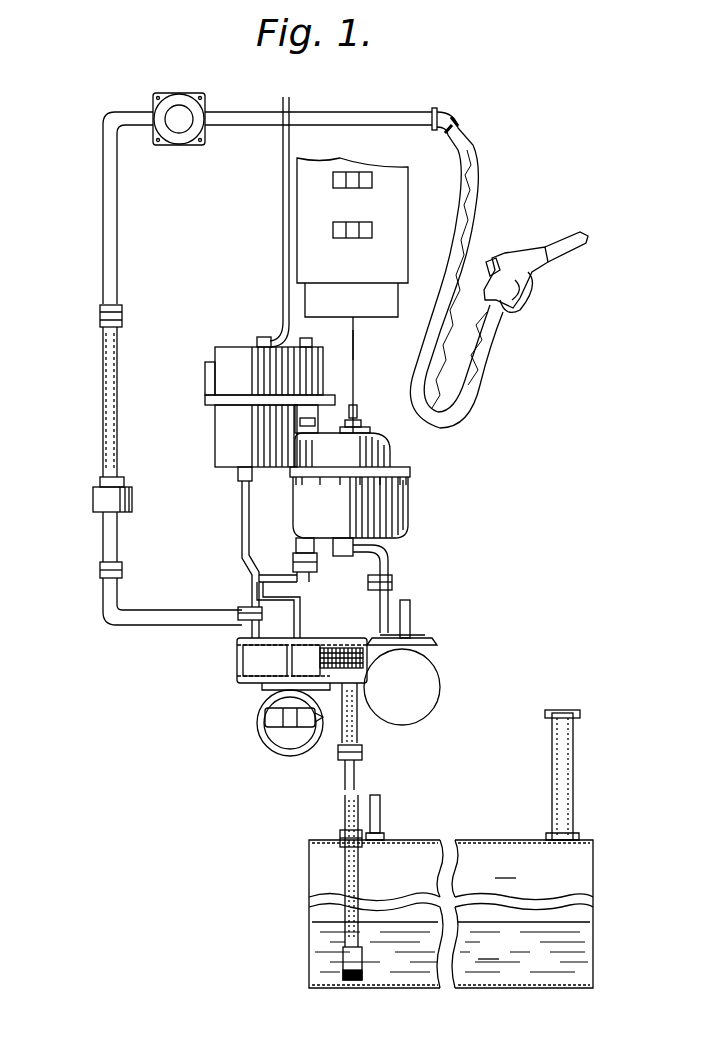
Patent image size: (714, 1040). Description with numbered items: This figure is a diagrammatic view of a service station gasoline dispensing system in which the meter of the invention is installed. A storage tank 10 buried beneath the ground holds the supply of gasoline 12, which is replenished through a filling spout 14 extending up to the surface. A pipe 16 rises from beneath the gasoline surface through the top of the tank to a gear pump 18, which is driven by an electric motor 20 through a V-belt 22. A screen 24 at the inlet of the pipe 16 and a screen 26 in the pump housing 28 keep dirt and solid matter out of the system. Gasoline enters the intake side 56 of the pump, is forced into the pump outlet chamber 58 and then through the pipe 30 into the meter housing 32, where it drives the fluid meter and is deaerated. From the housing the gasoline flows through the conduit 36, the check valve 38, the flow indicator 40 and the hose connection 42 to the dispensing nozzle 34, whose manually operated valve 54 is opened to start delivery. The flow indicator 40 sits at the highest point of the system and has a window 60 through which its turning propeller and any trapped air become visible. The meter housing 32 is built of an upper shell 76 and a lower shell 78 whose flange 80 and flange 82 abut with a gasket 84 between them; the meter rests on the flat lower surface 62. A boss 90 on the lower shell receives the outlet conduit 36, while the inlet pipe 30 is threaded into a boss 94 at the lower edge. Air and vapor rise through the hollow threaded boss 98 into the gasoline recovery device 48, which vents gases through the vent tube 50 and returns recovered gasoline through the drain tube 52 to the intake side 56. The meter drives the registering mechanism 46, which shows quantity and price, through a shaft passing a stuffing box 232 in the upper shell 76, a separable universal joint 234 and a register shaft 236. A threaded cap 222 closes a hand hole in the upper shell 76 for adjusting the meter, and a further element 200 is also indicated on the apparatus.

The storage tank 10 is at (451, 914).
The supply of gasoline 12 is at (451, 947).
The filling spout 14 is at (573, 781).
The pipe 16 is at (357, 882).
The gear pump 18 is at (278, 702).
The electric motor 20 is at (427, 687).
The V-belt 22 is at (360, 722).
The screen 24 is at (343, 978).
The screen 26 is at (400, 597).
The pump housing 28 is at (261, 664).
The pipe 30 is at (245, 591).
The meter housing 32 is at (389, 499).
The dispensing nozzle 34 is at (560, 245).
The conduit 36 is at (162, 622).
The check valve 38 is at (95, 505).
The flow indicator 40 is at (178, 93).
The hose connection 42 is at (470, 372).
The registering mechanism 46 is at (390, 216).
The gasoline recovery device 48 is at (215, 380).
The vent tube 50 is at (283, 300).
The drain tube 52 is at (242, 520).
The manually operated valve 54 is at (505, 260).
The intake side 56 is at (327, 660).
The pump outlet chamber 58 is at (265, 660).
The window 60 is at (186, 117).
The lower surface 62 is at (418, 537).
The upper shell 76 is at (400, 441).
The lower shell 78 is at (405, 515).
The flange 80 is at (398, 462).
The flange 82 is at (410, 478).
The gasket 84 is at (410, 470).
The boss 90 is at (343, 558).
The boss 94 is at (280, 542).
The hollow threaded boss 98 is at (300, 432).
The shaft housing 200 is at (297, 413).
The threaded cap 222 is at (332, 423).
The stuffing box 232 is at (361, 430).
The universal joint 234 is at (357, 412).
The register shaft 236 is at (355, 355).